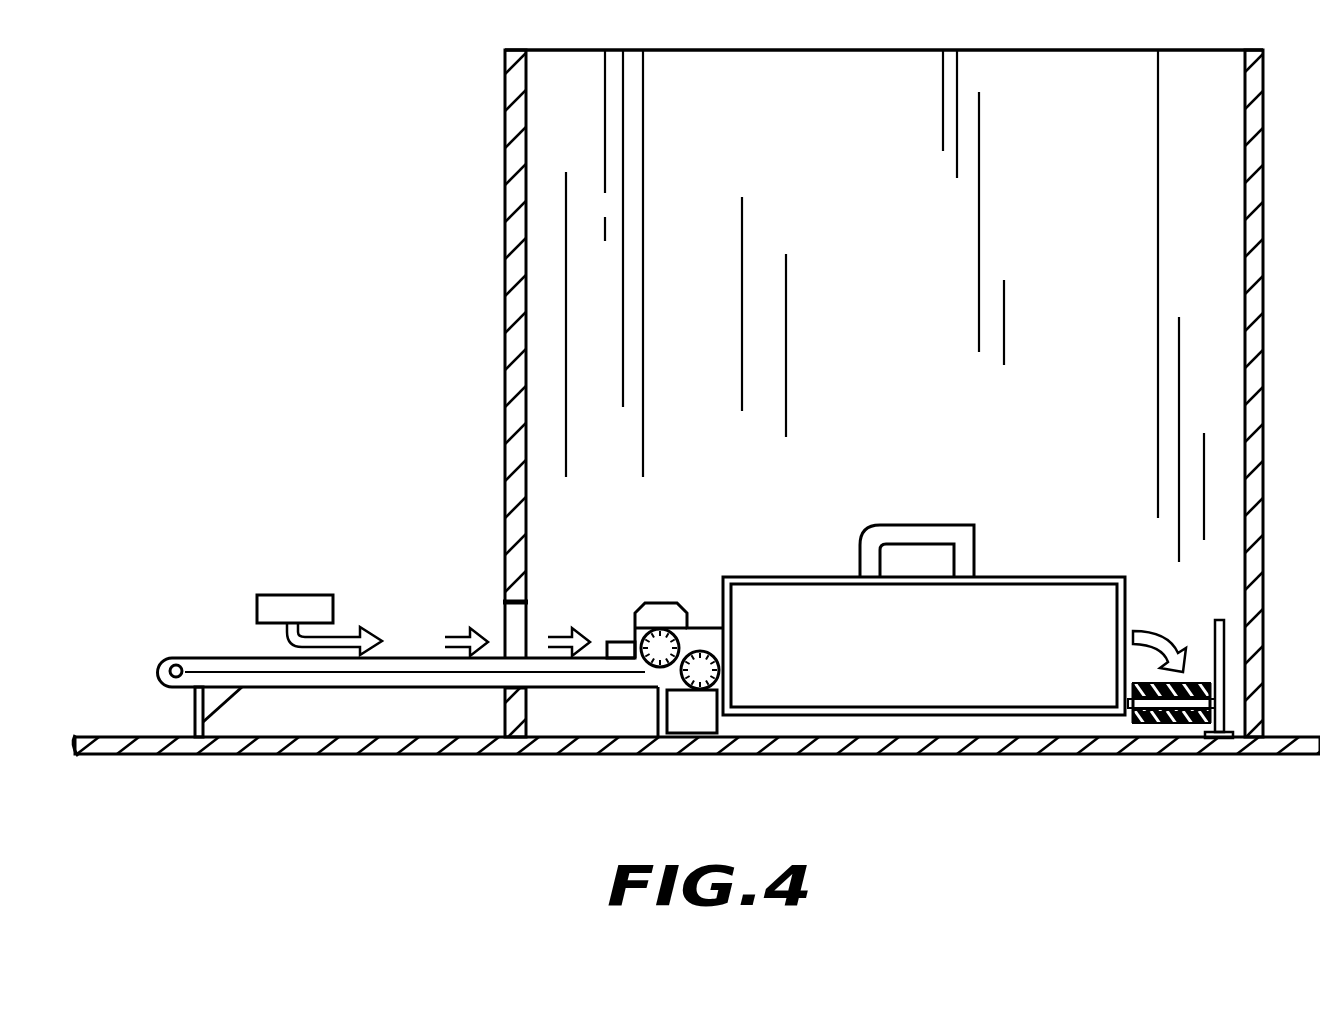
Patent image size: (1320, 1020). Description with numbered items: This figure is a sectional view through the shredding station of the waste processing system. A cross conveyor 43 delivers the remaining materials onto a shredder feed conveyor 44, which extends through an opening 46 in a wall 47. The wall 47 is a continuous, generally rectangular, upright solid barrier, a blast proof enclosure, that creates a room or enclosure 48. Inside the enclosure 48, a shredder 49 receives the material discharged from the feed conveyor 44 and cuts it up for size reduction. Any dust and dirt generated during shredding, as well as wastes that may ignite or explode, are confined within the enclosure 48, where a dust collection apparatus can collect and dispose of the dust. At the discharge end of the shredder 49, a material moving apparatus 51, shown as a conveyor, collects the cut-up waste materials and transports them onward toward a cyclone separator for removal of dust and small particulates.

The cross conveyor 43 is at (290, 607).
The shredder feed conveyor 44 is at (407, 657).
The opening 46 is at (520, 634).
The wall 47 is at (507, 352).
The enclosure 48 is at (930, 254).
The shredder 49 is at (797, 603).
The material moving apparatus 51 is at (1150, 723).